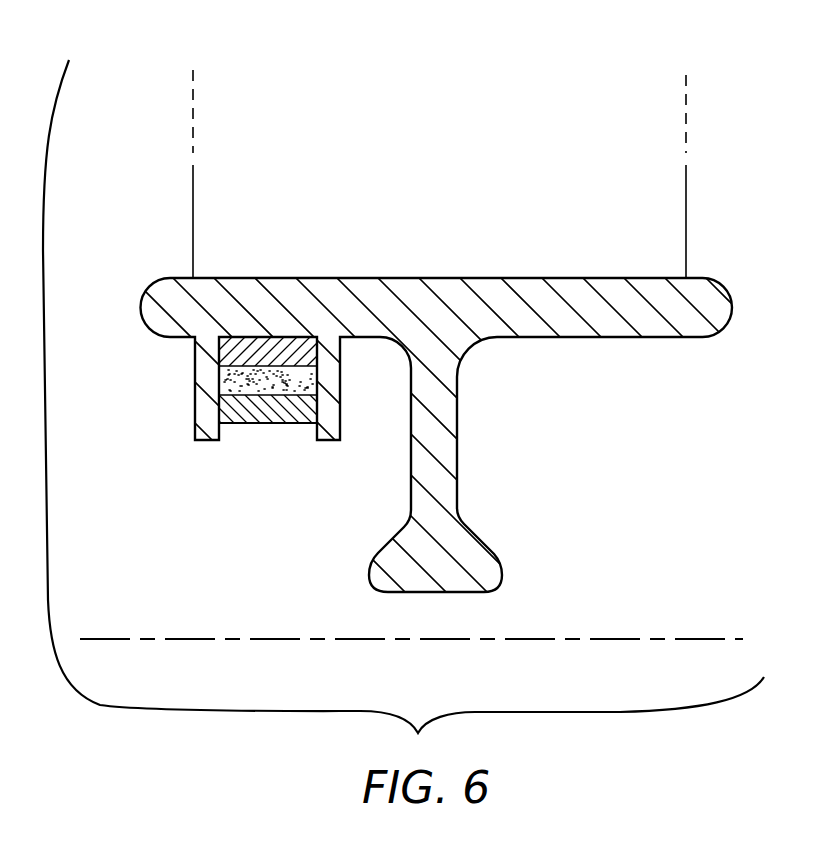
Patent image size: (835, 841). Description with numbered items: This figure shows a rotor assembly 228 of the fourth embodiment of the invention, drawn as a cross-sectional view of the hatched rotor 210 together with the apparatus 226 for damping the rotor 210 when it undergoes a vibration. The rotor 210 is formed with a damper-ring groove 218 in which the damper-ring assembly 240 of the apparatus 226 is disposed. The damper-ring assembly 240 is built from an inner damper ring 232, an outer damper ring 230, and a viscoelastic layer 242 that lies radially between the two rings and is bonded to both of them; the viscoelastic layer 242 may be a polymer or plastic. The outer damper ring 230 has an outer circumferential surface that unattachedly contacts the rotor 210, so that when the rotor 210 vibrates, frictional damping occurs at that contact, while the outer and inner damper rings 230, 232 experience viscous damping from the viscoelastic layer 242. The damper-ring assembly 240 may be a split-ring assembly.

The rotor 210 is at (692, 281).
The rotor assembly 228 is at (703, 116).
The damper-ring groove 218 is at (249, 349).
The outer damper ring 230 is at (280, 349).
The viscoelastic layer 242 is at (296, 380).
The inner damper ring 232 is at (243, 417).
The damper-ring assembly 240 is at (268, 424).
The apparatus 226 is at (295, 430).